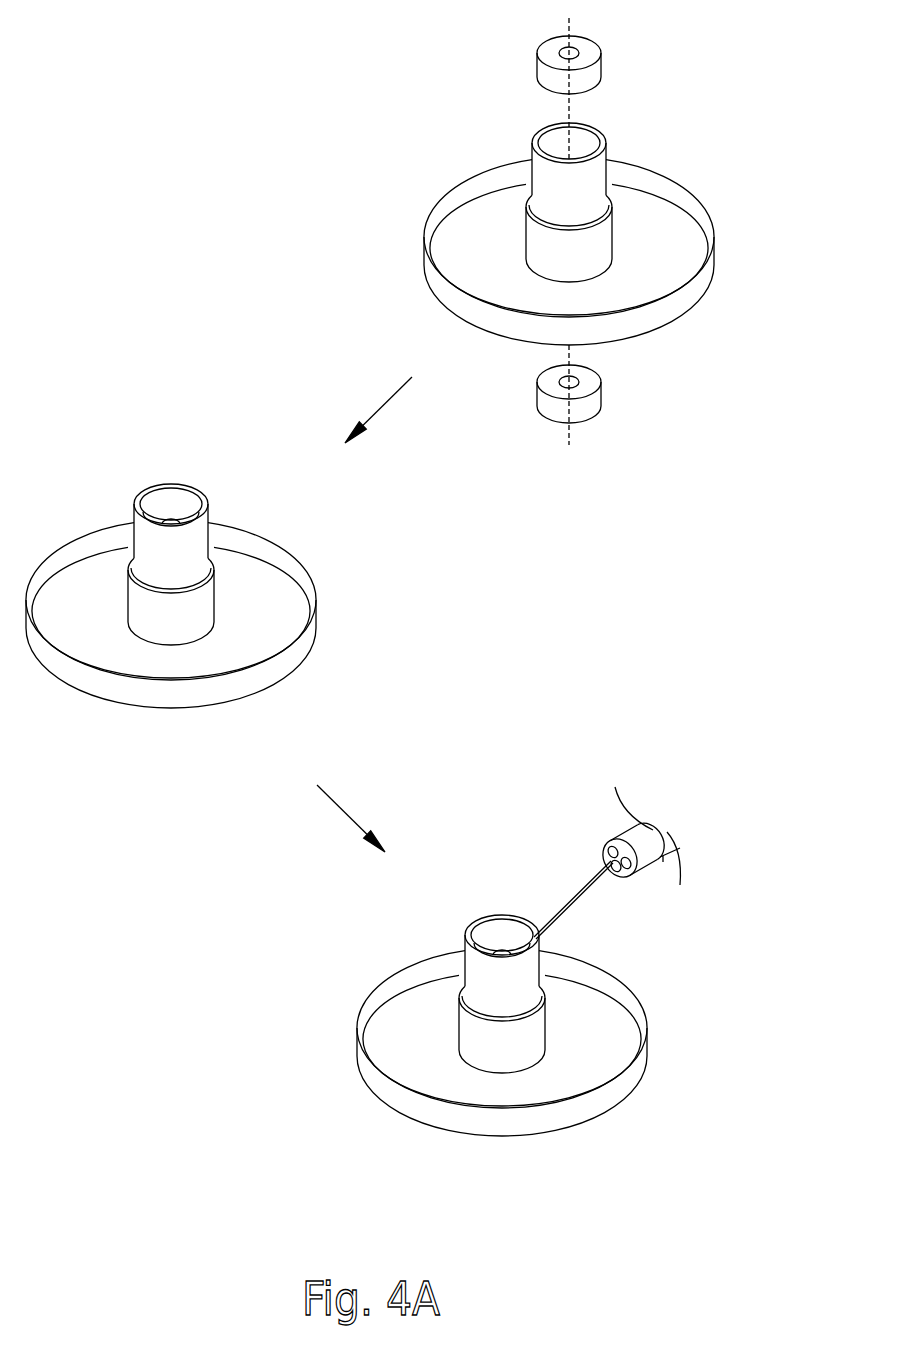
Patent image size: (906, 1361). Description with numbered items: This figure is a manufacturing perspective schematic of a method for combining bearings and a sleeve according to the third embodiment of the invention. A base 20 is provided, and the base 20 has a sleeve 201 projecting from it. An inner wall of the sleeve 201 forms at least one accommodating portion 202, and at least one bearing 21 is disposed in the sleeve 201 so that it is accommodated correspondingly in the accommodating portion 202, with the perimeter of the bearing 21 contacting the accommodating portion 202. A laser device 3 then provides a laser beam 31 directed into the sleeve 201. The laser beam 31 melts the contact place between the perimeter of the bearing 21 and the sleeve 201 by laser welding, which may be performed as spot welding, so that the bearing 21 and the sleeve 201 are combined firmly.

The base 20 is at (697, 303).
The sleeve 201 is at (587, 188).
The accommodating portion 202 is at (555, 147).
The bearing 21 is at (590, 47).
The laser device 3 is at (632, 843).
The laser beam 31 is at (582, 893).